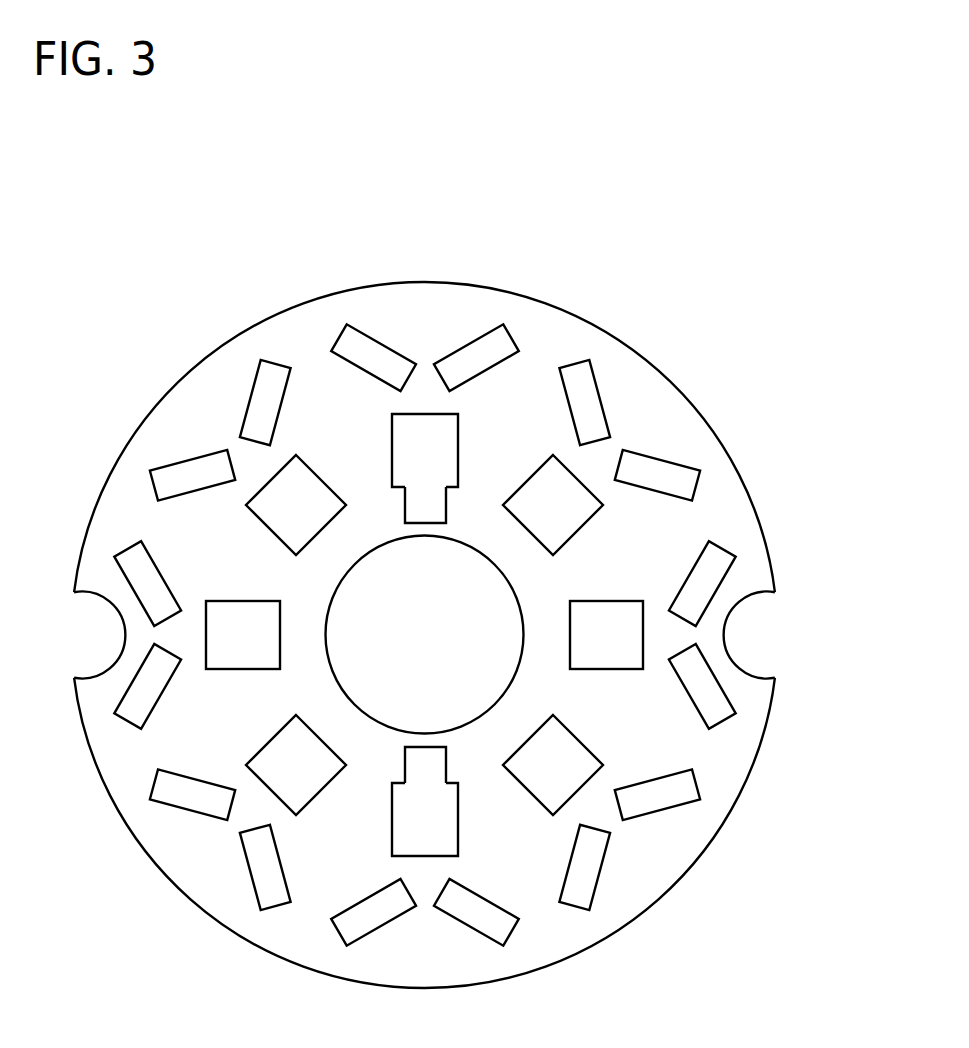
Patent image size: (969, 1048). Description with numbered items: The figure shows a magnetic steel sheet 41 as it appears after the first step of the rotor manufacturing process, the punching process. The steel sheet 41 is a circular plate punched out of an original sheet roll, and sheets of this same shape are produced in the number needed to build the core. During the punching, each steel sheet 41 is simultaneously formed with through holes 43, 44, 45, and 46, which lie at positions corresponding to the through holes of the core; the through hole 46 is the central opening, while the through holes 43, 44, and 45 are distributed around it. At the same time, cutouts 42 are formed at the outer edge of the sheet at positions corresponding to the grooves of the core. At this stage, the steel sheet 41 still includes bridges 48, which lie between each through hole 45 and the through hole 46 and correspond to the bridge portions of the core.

The magnetic steel sheet 41 is at (615, 238).
The cutout 42 is at (748, 617).
The through hole 43 is at (648, 458).
The through hole 44 is at (458, 434).
The through hole 45 is at (446, 497).
The through hole 46 is at (333, 595).
The bridge 48 is at (437, 524).